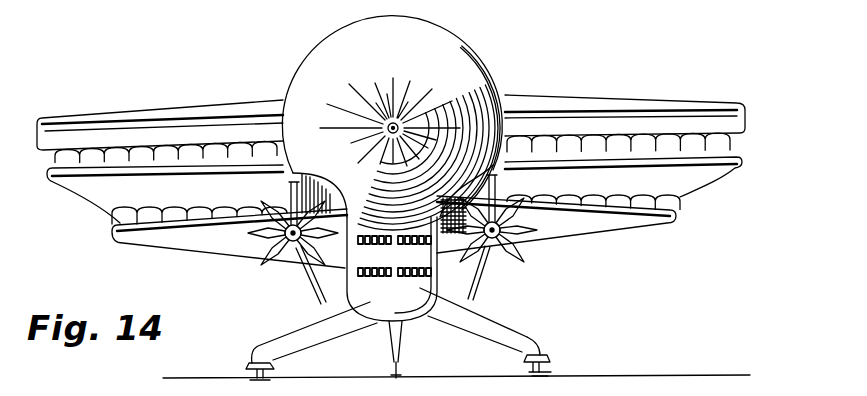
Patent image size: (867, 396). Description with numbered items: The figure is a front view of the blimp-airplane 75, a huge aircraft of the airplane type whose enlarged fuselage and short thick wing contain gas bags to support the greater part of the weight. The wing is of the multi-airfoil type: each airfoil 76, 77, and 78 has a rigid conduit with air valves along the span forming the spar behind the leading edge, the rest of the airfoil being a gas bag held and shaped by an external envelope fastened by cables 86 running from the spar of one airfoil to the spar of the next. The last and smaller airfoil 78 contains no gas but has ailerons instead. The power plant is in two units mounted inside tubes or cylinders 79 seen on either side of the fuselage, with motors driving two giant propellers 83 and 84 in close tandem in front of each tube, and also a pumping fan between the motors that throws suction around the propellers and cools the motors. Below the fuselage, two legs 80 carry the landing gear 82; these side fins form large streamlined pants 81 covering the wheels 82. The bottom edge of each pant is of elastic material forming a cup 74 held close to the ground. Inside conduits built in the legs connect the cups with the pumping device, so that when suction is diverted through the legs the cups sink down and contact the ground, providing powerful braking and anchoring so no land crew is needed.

The cup 74 is at (525, 362).
The spherical hull 75 is at (497, 83).
The airfoil 76 is at (391, 122).
The airfoil 77 is at (394, 190).
The last and smaller airfoil 78 is at (673, 223).
The tubes or cylinders 79 is at (496, 250).
The legs 80 is at (392, 333).
The pants 81 is at (542, 350).
The landing gear 82 is at (545, 370).
The propeller 83 is at (523, 248).
The propeller 84 is at (528, 260).
The cables 86 is at (732, 148).